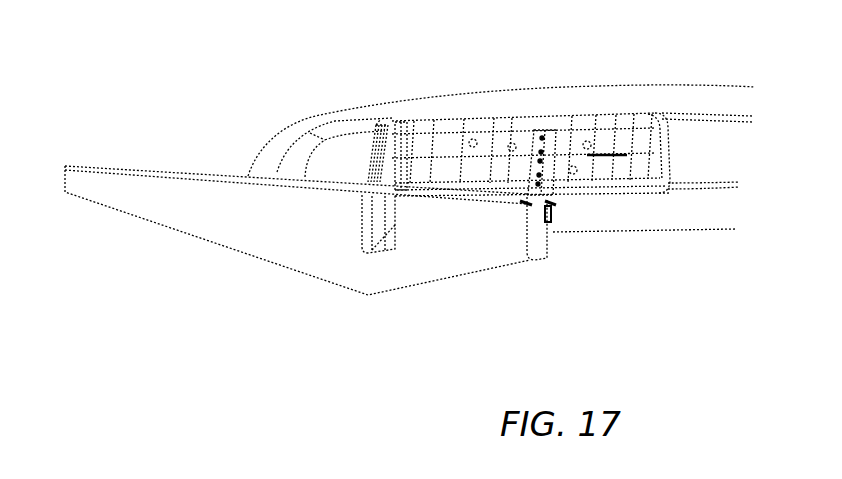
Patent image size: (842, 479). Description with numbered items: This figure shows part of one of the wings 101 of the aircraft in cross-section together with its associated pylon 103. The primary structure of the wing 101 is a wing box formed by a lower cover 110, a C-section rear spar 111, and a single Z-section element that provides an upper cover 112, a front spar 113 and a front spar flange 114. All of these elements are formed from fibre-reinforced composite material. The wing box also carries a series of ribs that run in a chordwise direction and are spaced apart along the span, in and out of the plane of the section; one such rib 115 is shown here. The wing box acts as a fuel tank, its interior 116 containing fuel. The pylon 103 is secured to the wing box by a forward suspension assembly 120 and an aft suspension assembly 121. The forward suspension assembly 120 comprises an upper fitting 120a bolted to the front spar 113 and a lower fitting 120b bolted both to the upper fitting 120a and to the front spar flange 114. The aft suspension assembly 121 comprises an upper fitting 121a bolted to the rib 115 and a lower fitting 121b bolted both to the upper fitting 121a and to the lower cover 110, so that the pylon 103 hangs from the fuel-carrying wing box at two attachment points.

The wing 101 is at (513, 80).
The pylon 103 is at (435, 252).
The lower cover 110 is at (632, 190).
The C-section rear spar 111 is at (663, 155).
The upper cover 112 is at (617, 115).
The front spar 113 is at (398, 151).
The front spar flange 114 is at (397, 185).
The rib 115 is at (643, 173).
The interior of the wing box 116 is at (506, 175).
The forward suspension assembly 120 is at (347, 231).
The upper fitting 120a is at (375, 153).
The lower fitting 120b is at (347, 224).
The aft suspension assembly 121 is at (530, 194).
The upper fitting 121a is at (542, 140).
The lower fitting 121b is at (537, 208).